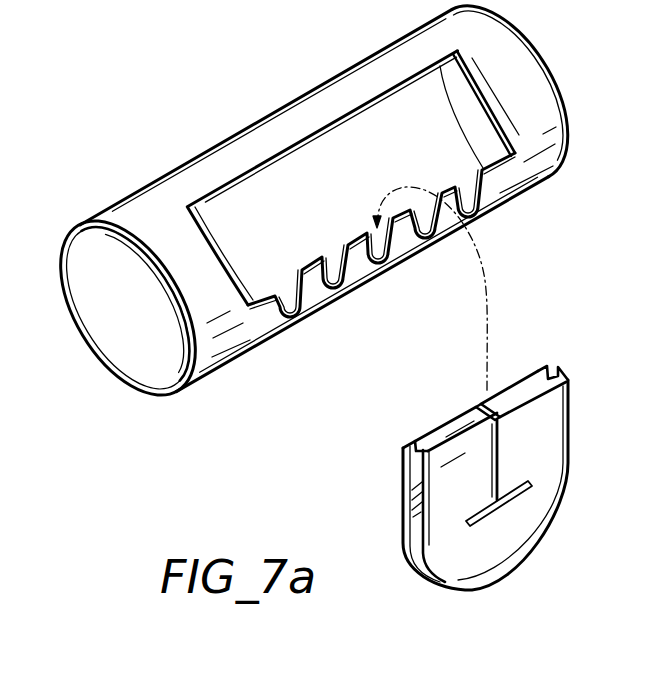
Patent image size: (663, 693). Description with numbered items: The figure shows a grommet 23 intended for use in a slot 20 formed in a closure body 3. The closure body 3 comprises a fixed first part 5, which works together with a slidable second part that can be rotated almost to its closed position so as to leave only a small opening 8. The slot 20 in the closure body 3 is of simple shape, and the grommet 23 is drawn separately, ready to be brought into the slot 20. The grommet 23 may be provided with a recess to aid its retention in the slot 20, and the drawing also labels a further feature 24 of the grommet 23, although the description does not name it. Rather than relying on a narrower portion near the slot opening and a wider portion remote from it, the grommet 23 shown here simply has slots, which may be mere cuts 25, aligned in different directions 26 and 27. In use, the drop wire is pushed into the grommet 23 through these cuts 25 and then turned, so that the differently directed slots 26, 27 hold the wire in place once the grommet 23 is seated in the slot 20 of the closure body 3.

The closure body 3 is at (368, 63).
The fixed first part 5 is at (172, 202).
The opening 8 is at (303, 172).
The slot 20 is at (392, 258).
The grommet 23 is at (413, 433).
The channel slot 24 is at (552, 372).
The cuts 25 is at (471, 408).
The slot direction 26 is at (493, 460).
The slot direction 27 is at (470, 508).